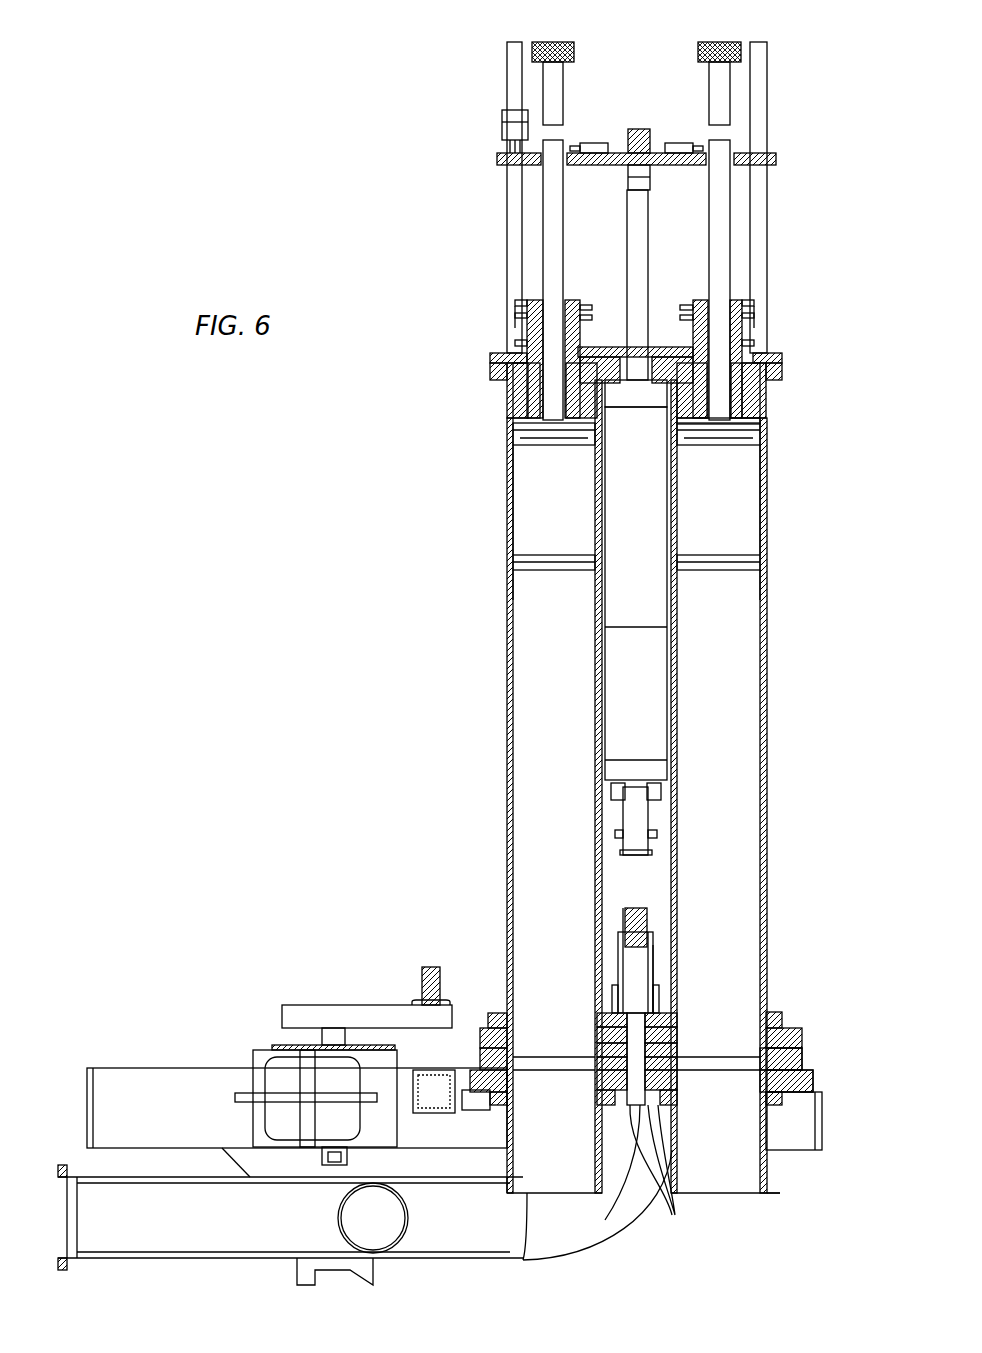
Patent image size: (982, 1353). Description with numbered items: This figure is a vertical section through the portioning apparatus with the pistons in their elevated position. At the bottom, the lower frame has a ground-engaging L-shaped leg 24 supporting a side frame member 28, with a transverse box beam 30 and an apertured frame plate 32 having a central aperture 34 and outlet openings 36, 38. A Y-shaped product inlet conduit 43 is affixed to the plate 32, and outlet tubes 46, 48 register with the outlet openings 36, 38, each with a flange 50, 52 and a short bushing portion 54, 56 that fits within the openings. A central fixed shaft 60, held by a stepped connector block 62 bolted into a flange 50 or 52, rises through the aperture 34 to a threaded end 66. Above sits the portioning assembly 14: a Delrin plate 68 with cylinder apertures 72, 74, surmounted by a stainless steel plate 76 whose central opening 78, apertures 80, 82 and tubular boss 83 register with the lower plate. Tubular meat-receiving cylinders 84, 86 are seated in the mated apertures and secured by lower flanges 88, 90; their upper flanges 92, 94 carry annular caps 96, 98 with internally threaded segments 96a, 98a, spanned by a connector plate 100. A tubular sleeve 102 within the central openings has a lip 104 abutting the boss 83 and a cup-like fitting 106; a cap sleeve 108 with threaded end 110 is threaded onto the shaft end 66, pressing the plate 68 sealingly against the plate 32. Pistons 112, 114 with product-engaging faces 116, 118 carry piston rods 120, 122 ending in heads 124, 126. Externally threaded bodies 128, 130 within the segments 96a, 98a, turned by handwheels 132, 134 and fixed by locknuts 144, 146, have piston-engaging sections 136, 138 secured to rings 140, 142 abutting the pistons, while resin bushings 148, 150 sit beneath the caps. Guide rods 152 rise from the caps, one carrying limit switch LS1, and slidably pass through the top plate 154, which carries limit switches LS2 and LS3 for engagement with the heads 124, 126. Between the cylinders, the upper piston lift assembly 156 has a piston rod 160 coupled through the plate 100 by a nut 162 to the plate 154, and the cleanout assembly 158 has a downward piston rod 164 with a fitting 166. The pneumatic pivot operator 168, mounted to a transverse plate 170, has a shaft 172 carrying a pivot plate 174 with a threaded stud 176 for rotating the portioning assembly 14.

The portioning assembly 14 is at (852, 985).
The L-shaped leg 24 is at (373, 1270).
The side frame member 28 is at (120, 1118).
The transverse box beam 30 is at (430, 1113).
The frame plate 32 is at (813, 1076).
The central aperture 34 is at (677, 1088).
The outlet opening 36 is at (597, 1078).
The outlet opening 38 is at (766, 1100).
The product inlet conduit 43 is at (185, 1258).
The outlet tube 46 is at (507, 1193).
The outlet tube 48 is at (767, 1193).
The flange 50 is at (480, 1110).
The flange 52 is at (782, 1108).
The bushing portion 54 is at (507, 1085).
The bushing portion 56 is at (766, 1098).
The central fixed shaft 60 is at (606, 1216).
The stepped connector block 62 is at (675, 1215).
The threaded end 66 is at (648, 912).
The synthetic resin plate 68 is at (802, 1055).
The cylinder aperture 72 is at (510, 1062).
The cylinder aperture 74 is at (766, 1062).
The stainless steel plate 76 is at (802, 1040).
The central opening 78 is at (597, 1045).
The cylinder-receiving aperture 80 is at (508, 1040).
The cylinder-receiving aperture 82 is at (677, 1036).
The tubular boss 83 is at (610, 1010).
The meat-receiving cylinder 84 is at (507, 870).
The meat-receiving cylinder 86 is at (767, 940).
The lower integral flange 88 is at (495, 1012).
The lower integral flange 90 is at (770, 1012).
The upper circumscribing flange 92 is at (495, 380).
The upper circumscribing flange 94 is at (775, 380).
The annular cap 96 is at (490, 360).
The internally threaded segment 96a is at (515, 343).
The annular cap 98 is at (782, 360).
The internally threaded segment 98a is at (752, 344).
The connector plate 100 is at (640, 345).
The tubular sleeve 102 is at (677, 1025).
The circumscribing lip 104 is at (612, 995).
The cup-like fitting 106 is at (660, 980).
The cap sleeve 108 is at (620, 955).
The threaded uppermost end 110 is at (615, 930).
The piston 112 is at (568, 490).
The piston 114 is at (712, 520).
The product-engaging face 116 is at (565, 580).
The product-engaging face 118 is at (720, 580).
The piston rod 120 is at (555, 78).
The piston rod 122 is at (712, 78).
The piston rod head 124 is at (545, 44).
The piston rod head 126 is at (705, 45).
The externally threaded body 128 is at (527, 330).
The externally threaded body 130 is at (742, 352).
The handwheel 132 is at (520, 302).
The handwheel 134 is at (745, 302).
The piston-engaging section 136 is at (600, 420).
The piston-engaging section 138 is at (760, 418).
The ring 140 is at (520, 445).
The ring 142 is at (725, 432).
The locknut 144 is at (515, 315).
The locknut 146 is at (750, 318).
The synthetic resin bushing 148 is at (507, 432).
The synthetic resin bushing 150 is at (705, 448).
The guide rod 152 is at (507, 66).
The top plate 154 is at (776, 160).
The upper piston lift assembly 156 is at (730, 548).
The cleanout assembly 158 is at (633, 685).
The piston rod 160 is at (633, 250).
The nut 162 is at (642, 130).
The piston rod 164 is at (636, 826).
The fitting 166 is at (648, 848).
The pivot operator 168 is at (240, 1095).
The transversely extending plate 170 is at (385, 1068).
The shaft 172 is at (322, 1036).
The pivot plate 174 is at (290, 1015).
The threaded stud 176 is at (428, 990).
The limit switch LS1 is at (502, 125).
The limit switch LS2 is at (580, 146).
The limit switch LS3 is at (655, 150).